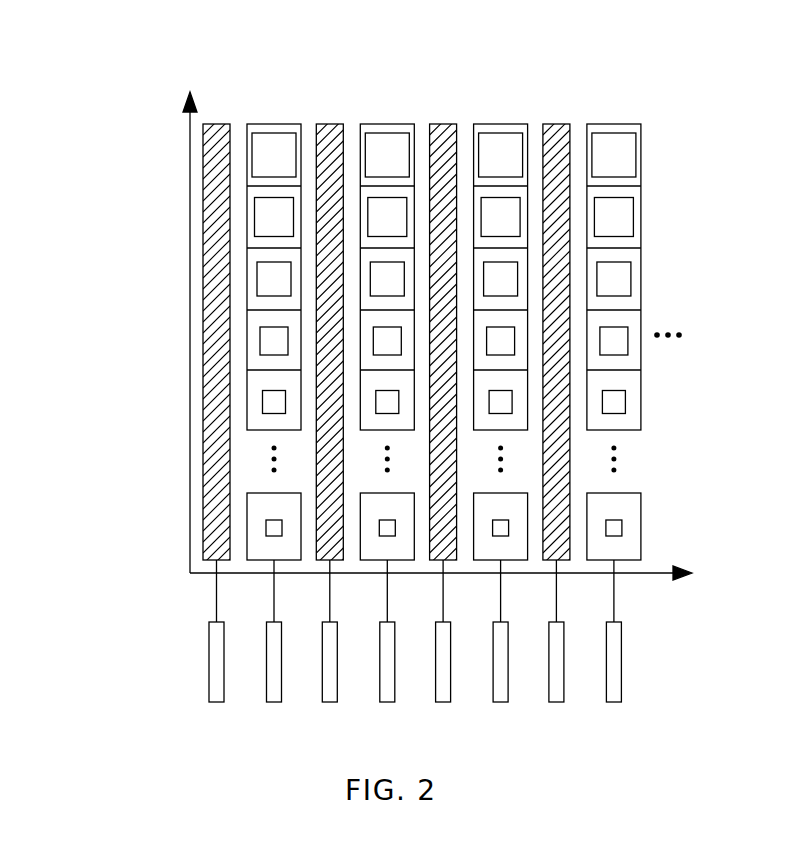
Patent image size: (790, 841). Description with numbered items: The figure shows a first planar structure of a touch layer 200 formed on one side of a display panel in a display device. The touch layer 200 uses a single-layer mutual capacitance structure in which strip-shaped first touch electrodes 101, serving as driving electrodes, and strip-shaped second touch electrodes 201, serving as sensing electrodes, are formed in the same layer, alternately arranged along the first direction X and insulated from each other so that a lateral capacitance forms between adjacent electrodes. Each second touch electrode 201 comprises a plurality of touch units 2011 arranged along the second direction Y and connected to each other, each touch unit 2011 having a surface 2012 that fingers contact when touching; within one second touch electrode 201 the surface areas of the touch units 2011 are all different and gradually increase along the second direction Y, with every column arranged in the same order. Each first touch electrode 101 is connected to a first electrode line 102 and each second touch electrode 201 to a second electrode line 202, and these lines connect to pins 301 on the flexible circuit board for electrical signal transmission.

The touch layer 200 is at (101, 32).
The first touch electrode 101 is at (202, 218).
The first electrode line 102 is at (213, 581).
The second touch electrode 201 is at (255, 124).
The touch unit 2011 is at (255, 283).
The surface 2012 is at (278, 147).
The second electrode line 202 is at (273, 602).
The pin 301 is at (208, 658).